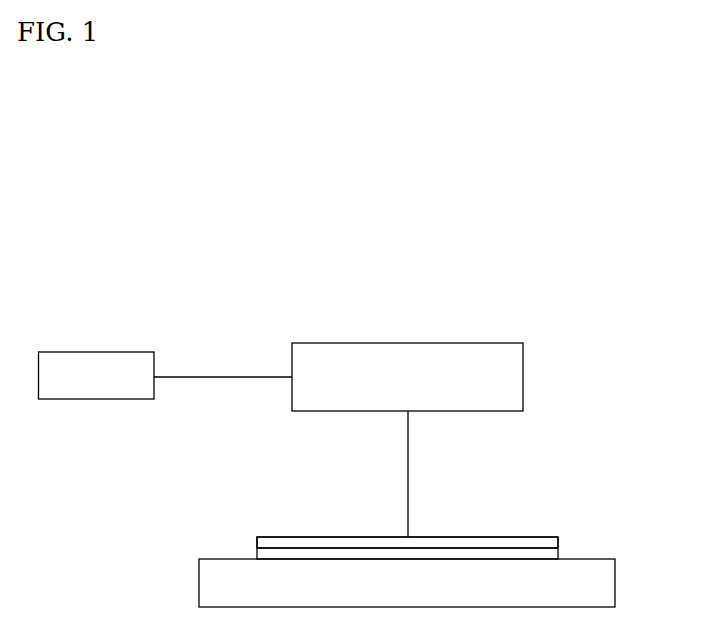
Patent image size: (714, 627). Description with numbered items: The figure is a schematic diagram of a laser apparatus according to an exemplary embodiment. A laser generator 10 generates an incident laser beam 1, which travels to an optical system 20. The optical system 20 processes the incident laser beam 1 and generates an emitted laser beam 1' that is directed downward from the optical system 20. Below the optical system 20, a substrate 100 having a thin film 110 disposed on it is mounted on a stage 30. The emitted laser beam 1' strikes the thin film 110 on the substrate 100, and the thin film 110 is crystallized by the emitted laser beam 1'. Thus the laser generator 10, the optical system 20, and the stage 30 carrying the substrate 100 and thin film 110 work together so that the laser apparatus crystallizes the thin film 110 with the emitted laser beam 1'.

The laser generator 10 is at (98, 352).
The incident laser beam 1 is at (223, 346).
The optical system 20 is at (524, 375).
The emitted laser beam 1' is at (437, 474).
The thin film 110 is at (514, 537).
The substrate 100 is at (560, 552).
The stage 30 is at (616, 582).